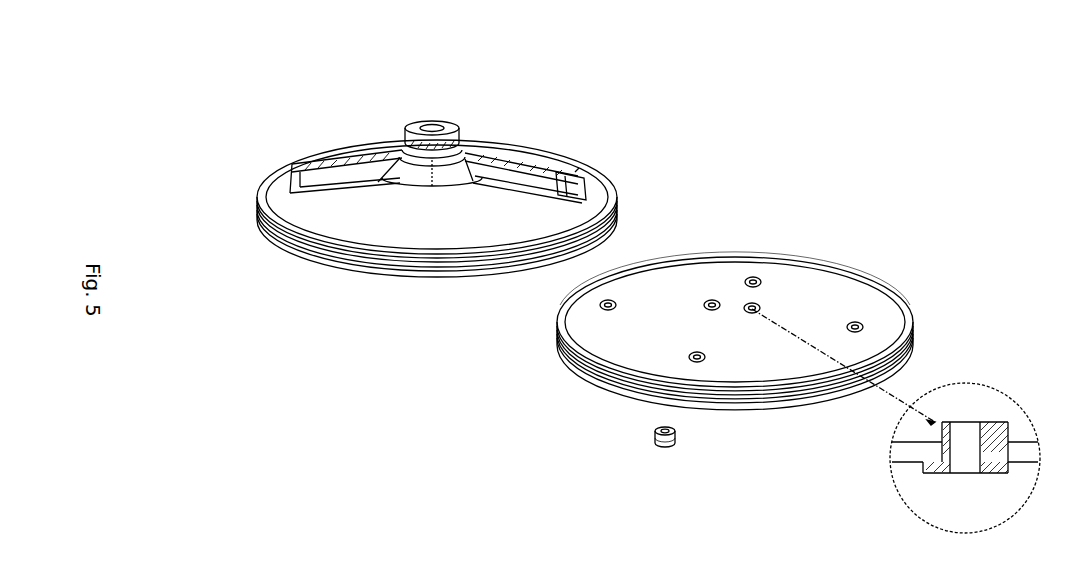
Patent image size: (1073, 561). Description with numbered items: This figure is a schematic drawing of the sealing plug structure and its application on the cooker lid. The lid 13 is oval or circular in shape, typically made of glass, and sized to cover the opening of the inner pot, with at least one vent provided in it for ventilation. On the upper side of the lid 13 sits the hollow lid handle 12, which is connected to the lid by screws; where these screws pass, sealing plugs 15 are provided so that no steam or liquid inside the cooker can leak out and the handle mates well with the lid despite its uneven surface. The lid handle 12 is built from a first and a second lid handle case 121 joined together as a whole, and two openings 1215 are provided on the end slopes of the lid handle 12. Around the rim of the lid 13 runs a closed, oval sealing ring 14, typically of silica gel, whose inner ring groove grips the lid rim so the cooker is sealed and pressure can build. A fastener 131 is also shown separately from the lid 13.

The lid handle 12 is at (507, 158).
The lid handle case 121 is at (322, 165).
The opening 1215 is at (573, 171).
The lid 13 is at (780, 290).
The fastener 131 is at (680, 436).
The sealing ring 14 is at (628, 270).
The sealing plug 15 is at (1003, 427).